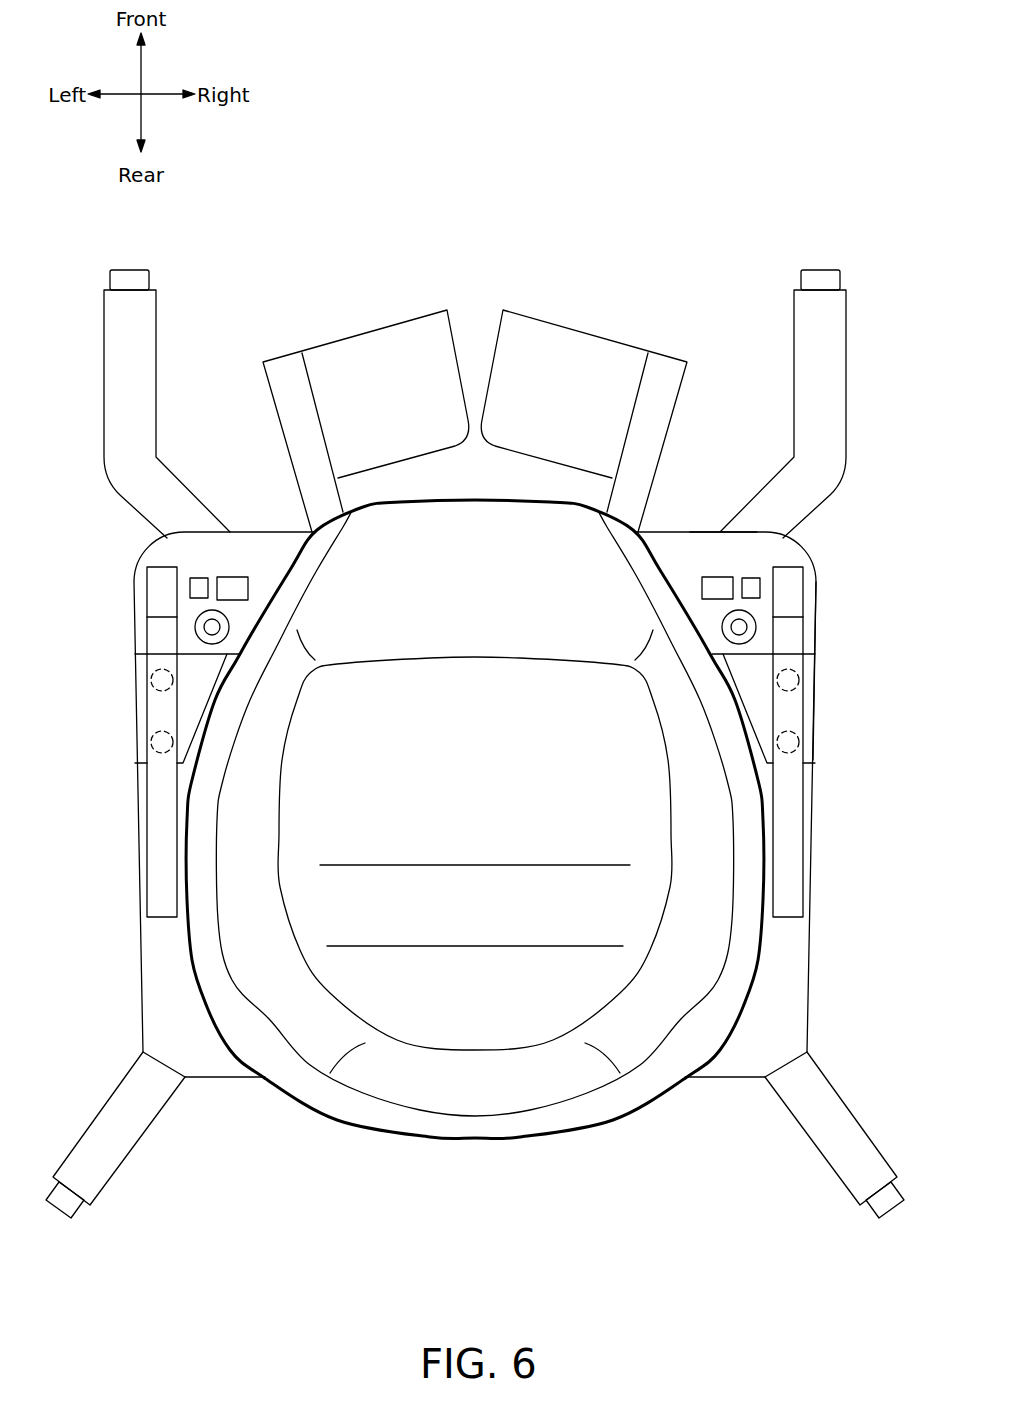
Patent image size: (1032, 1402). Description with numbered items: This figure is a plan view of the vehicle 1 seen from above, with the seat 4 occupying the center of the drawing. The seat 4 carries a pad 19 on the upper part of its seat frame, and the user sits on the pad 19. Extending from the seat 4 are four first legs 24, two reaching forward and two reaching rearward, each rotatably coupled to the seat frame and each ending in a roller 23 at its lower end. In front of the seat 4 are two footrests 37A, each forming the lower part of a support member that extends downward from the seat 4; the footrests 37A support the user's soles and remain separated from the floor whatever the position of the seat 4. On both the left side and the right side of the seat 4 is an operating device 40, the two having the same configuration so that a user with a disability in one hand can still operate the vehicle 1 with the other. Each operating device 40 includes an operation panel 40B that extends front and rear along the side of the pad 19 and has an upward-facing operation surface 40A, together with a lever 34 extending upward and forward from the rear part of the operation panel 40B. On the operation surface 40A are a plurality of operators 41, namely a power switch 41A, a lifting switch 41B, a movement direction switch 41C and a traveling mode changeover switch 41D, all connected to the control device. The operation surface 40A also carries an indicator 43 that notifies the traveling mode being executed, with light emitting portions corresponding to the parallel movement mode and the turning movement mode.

The vehicle 1 is at (632, 138).
The seat 4 is at (542, 1123).
The pad 19 is at (442, 1102).
The roller 23 is at (135, 278).
The first leg 24 is at (118, 348).
The lever 34 is at (152, 795).
The footrest 37A is at (365, 347).
The operating device 40 is at (135, 560).
The operation surface 40A is at (752, 543).
The operation panel 40B is at (810, 632).
The operators 41 is at (655, 632).
The power switch 41A is at (799, 672).
The lifting switch 41B is at (799, 735).
The movement direction switch 41C is at (723, 630).
The traveling mode changeover switch 41D is at (703, 590).
The indicator 43 is at (748, 580).